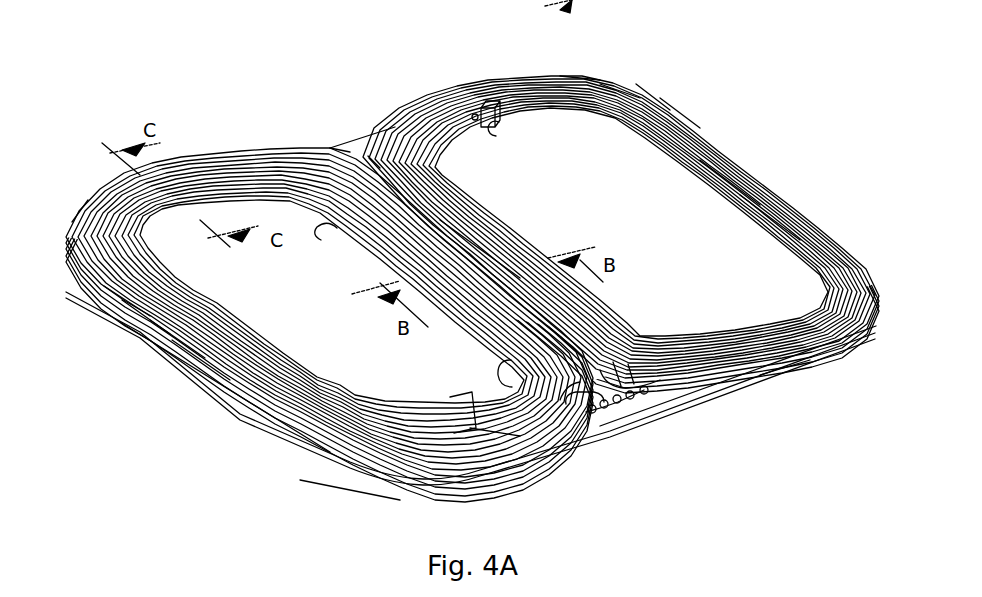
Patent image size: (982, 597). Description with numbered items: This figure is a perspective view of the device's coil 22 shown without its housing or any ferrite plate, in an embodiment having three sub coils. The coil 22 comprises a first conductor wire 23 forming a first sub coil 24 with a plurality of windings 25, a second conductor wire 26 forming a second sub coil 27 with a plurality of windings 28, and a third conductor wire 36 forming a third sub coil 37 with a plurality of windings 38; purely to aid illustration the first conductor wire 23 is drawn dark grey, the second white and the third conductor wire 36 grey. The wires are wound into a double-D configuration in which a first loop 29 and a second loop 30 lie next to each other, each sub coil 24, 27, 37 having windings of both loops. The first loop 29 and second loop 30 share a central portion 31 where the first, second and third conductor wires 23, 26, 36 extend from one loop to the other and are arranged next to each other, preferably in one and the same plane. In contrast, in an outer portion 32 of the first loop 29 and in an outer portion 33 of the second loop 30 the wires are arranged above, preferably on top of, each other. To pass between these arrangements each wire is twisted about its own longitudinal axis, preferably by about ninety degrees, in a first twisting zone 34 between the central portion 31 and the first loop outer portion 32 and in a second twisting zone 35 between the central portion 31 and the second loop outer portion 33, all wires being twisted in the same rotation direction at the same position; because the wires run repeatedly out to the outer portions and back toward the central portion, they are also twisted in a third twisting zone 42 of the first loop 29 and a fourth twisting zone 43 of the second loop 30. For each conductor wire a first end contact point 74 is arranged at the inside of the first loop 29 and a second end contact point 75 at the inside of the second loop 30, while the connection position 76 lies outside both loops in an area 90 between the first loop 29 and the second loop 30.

The coil 22 is at (202, 126).
The first conductor wire 23 is at (252, 420).
The first sub coil 24 is at (260, 458).
The windings 25 is at (740, 168).
The second conductor wire 26 is at (192, 371).
The second sub coil 27 is at (148, 346).
The windings 28 is at (100, 190).
The first loop 29 is at (334, 486).
The second loop 30 is at (744, 140).
The central portion 31 is at (478, 210).
The outer portion of the first loop 32 is at (116, 308).
The outer portion of the second loop 33 is at (783, 203).
The first twisting zone 34 is at (342, 151).
The second twisting zone 35 is at (625, 385).
The third conductor wire 36 is at (668, 100).
The third sub coil 37 is at (657, 77).
The windings 38 is at (571, 76).
The third twisting zone 42 is at (566, 426).
The fourth twisting zone 43 is at (381, 142).
The first end contact point 74 is at (462, 432).
The second end contact point 75 is at (476, 100).
The connection position 76 is at (668, 426).
The area between the first loop and the second loop 90 is at (605, 414).